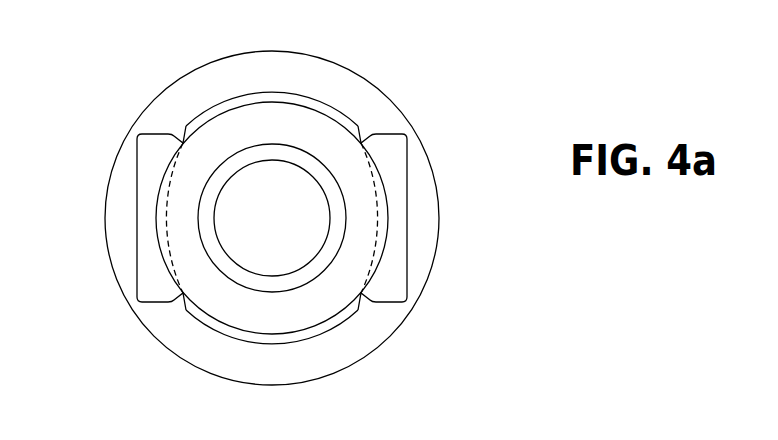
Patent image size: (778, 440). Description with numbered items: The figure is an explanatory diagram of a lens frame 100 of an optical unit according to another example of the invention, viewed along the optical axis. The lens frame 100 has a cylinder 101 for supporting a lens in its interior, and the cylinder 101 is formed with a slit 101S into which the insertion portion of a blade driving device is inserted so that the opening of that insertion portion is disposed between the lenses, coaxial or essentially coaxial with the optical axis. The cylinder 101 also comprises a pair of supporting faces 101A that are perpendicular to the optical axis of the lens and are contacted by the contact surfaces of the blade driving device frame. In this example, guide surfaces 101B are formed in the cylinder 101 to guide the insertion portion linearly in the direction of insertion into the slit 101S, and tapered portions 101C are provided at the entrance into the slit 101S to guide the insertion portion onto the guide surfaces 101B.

The lens frame 100 is at (352, 67).
The cylinder 101 is at (438, 193).
The slit 101S is at (237, 112).
The supporting faces 101A is at (155, 145).
The guide surfaces 101B is at (136, 255).
The tapered portions 101C is at (177, 303).